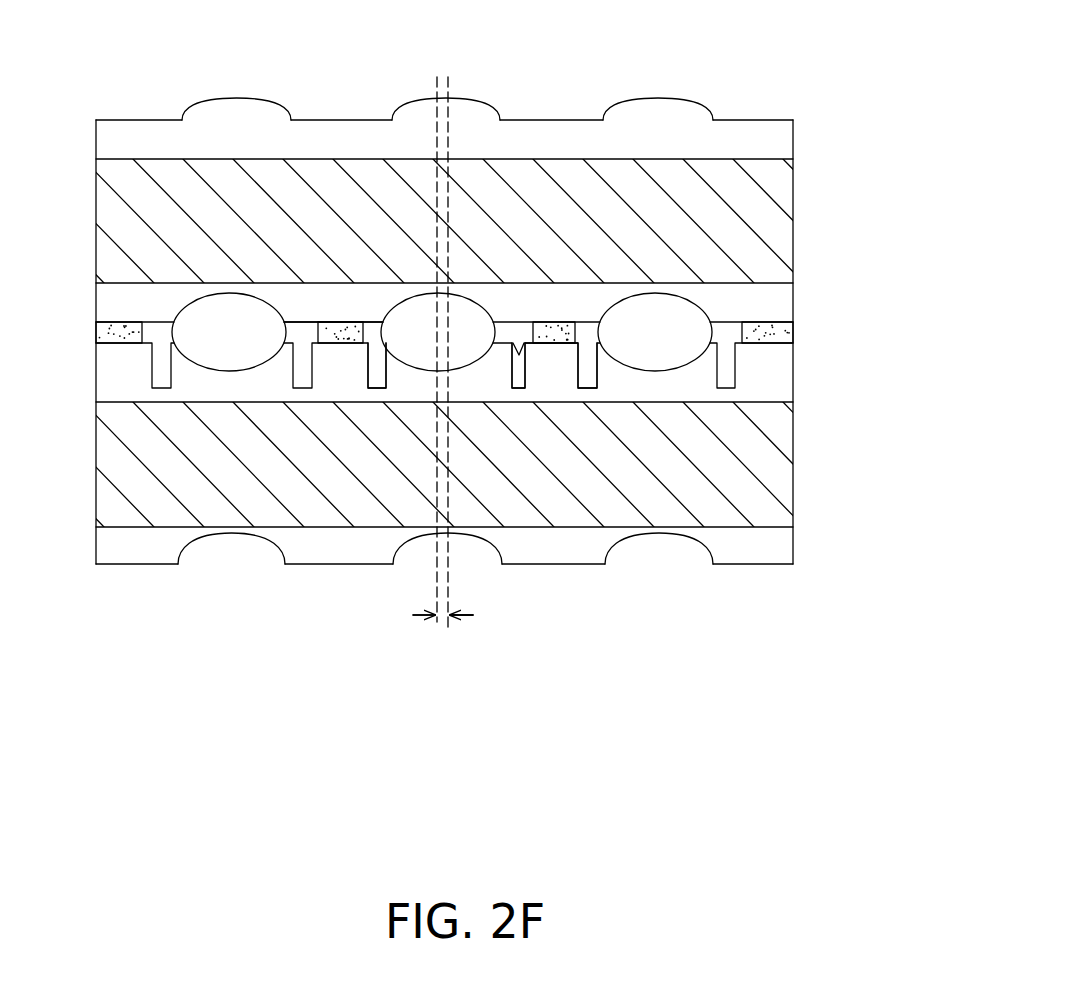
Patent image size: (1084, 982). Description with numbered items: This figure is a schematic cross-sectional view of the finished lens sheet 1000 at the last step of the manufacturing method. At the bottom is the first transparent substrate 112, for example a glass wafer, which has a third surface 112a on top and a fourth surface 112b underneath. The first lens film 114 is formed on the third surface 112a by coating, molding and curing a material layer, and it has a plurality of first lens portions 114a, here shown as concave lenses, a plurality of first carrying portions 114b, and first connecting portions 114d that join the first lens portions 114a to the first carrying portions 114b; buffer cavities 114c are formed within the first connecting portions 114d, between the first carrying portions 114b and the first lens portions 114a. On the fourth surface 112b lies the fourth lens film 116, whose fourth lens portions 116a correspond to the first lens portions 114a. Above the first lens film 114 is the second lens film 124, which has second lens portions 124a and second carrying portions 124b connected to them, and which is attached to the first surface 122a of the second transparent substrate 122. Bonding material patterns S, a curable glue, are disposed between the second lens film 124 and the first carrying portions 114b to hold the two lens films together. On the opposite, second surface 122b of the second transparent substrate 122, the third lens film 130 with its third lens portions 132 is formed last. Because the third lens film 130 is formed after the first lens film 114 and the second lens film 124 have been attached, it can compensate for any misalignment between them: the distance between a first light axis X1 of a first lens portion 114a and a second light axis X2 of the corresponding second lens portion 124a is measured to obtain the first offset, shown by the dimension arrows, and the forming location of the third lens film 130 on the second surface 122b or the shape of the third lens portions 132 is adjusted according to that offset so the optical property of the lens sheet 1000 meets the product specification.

The lens sheet 1000 is at (848, 682).
The third lens film 130 is at (775, 136).
The third lens portions 132 is at (670, 121).
The second transparent substrate 122 is at (773, 185).
The first surface 122a is at (752, 164).
The second surface 122b is at (753, 281).
The second lens film 124 is at (775, 305).
The second lens portions 124a is at (412, 288).
The second carrying portions 124b is at (370, 300).
The bonding material patterns S is at (343, 320).
The first lens film 114 is at (780, 385).
The first lens portions 114a is at (465, 387).
The first carrying portions 114b is at (567, 352).
The buffer cavities 114c is at (521, 342).
The first connecting portions 114d is at (520, 397).
The first transparent substrate 112 is at (765, 473).
The third surface 112a is at (750, 406).
The fourth surface 112b is at (744, 522).
The fourth lens film 116 is at (777, 553).
The fourth lens portions 116a is at (662, 534).
The first light axis X1 is at (447, 627).
The second light axis X2 is at (438, 588).